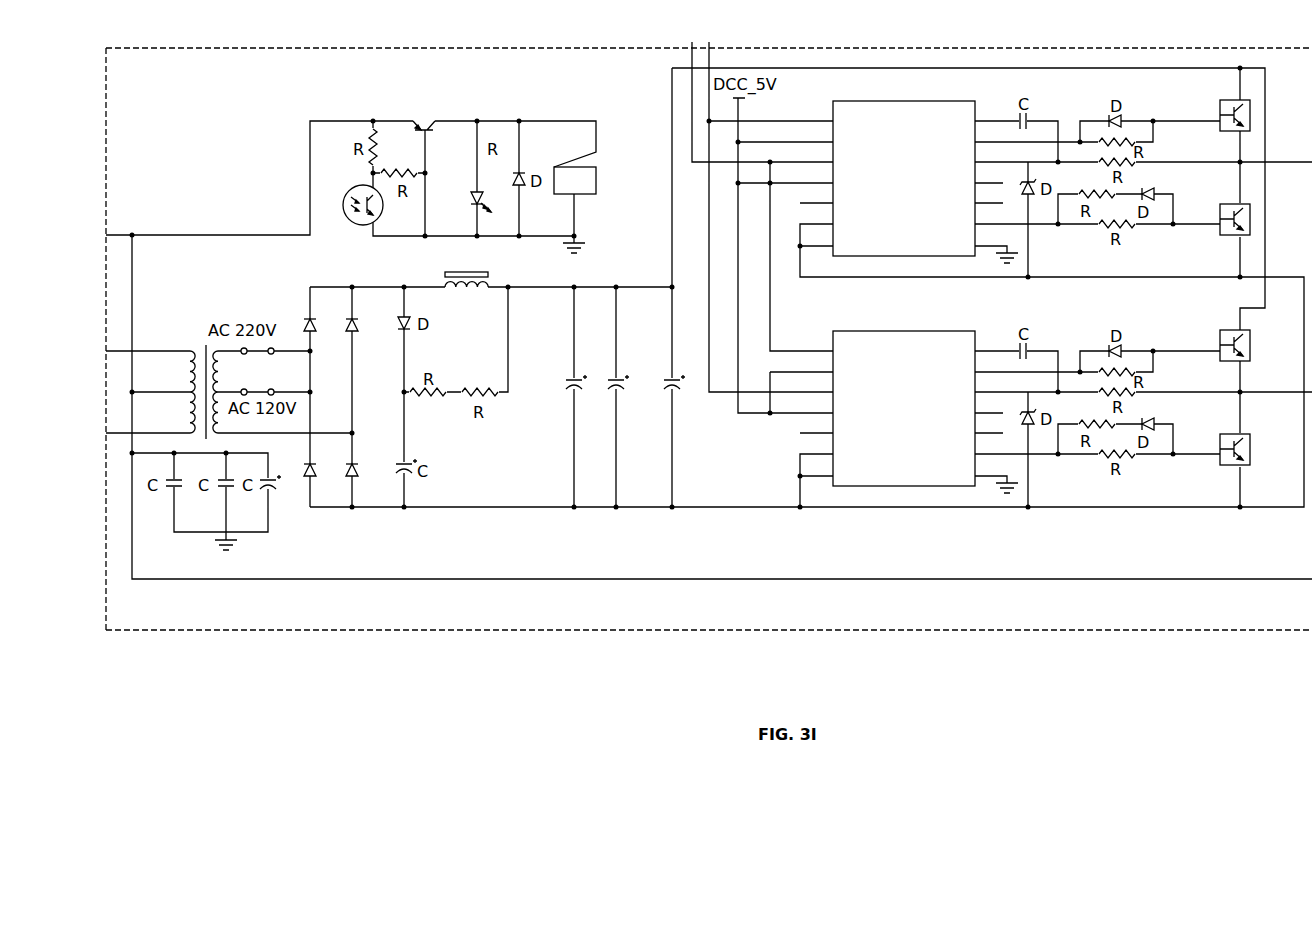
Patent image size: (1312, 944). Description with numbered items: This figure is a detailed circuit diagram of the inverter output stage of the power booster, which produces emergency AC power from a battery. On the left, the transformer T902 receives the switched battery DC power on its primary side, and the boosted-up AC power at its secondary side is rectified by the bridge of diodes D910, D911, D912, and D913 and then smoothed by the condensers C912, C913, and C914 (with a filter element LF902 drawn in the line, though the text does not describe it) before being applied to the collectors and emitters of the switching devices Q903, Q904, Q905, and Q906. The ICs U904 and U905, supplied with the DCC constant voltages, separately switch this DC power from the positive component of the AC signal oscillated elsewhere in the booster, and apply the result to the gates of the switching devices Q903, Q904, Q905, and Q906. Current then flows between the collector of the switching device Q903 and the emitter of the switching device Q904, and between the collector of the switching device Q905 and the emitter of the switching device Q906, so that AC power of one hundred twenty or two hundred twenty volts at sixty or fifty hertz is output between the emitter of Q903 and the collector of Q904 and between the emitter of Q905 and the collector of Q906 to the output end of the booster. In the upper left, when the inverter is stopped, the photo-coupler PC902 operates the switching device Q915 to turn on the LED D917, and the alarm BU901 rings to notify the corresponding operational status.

The switching device Q915 is at (435, 113).
The photo-coupler PC902 is at (354, 209).
The LED D917 is at (472, 203).
The alarm BU901 is at (604, 180).
The transformer T902 is at (204, 359).
The diode D910 is at (322, 326).
The diode D911 is at (365, 326).
The diode D912 is at (301, 483).
The diode D913 is at (341, 483).
The inductor filter LF902 is at (466, 269).
The condenser C914 is at (567, 411).
The condenser C913 is at (626, 411).
The condenser C912 is at (683, 411).
The IC U904 is at (904, 165).
The IC U905 is at (904, 395).
The switching device Q903 is at (1216, 103).
The switching device Q904 is at (1216, 206).
The switching device Q905 is at (1247, 352).
The switching device Q906 is at (1247, 456).